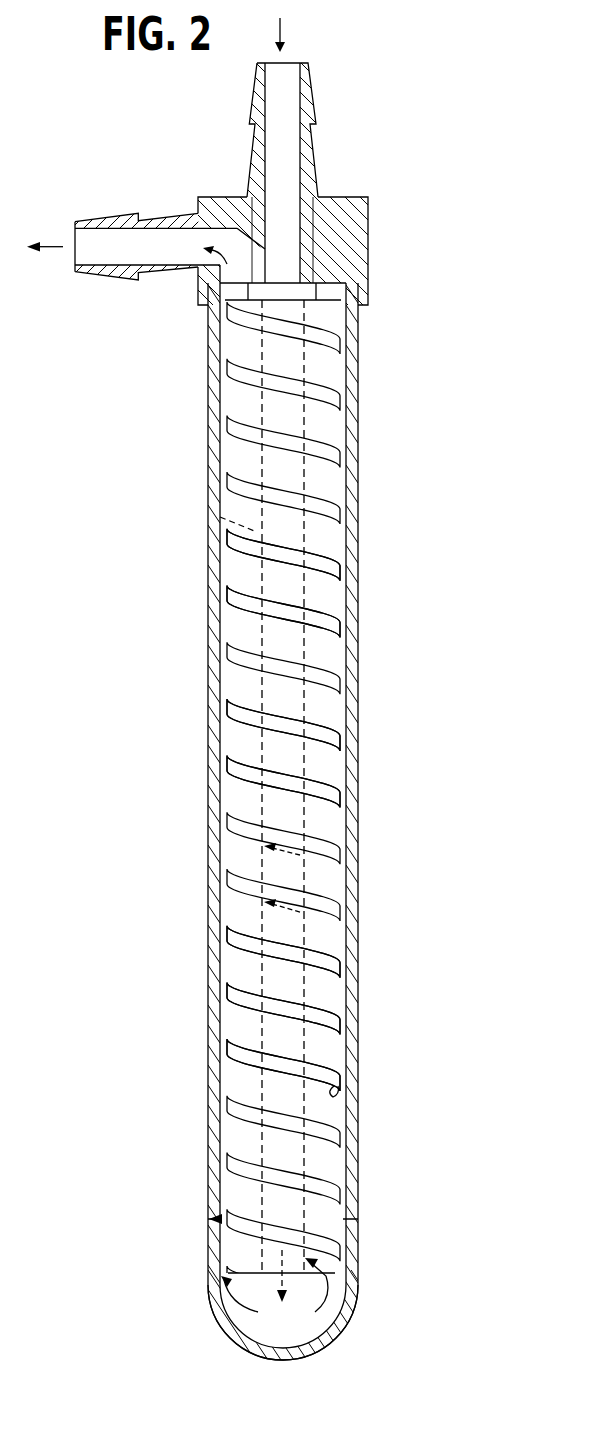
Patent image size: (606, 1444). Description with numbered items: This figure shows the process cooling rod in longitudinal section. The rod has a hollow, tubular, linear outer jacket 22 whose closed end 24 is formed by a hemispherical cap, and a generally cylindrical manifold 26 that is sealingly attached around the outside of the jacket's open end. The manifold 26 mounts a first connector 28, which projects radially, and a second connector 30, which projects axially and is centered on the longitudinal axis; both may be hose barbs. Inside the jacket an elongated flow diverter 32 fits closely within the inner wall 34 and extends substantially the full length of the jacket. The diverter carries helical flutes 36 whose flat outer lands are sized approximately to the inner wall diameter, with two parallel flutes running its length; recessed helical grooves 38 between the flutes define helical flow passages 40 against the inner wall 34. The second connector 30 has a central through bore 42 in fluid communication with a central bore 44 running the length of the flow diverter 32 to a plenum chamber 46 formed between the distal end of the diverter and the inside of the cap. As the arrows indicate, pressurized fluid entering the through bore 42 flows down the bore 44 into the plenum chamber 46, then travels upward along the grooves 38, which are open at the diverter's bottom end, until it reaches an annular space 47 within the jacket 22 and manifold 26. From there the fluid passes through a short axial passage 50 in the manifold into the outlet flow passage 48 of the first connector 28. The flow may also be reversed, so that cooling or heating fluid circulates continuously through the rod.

The outer jacket 22 is at (358, 492).
The closed end 24 is at (225, 1327).
The manifold 26 is at (368, 230).
The first connector 28 is at (113, 278).
The second connector 30 is at (316, 96).
The flow diverter 32 is at (237, 1036).
The inner wall 34 is at (333, 1087).
The helical flutes 36 is at (335, 1013).
The helical grooves 38 is at (325, 757).
The helical flow passages 40 is at (342, 594).
The central through bore 42 is at (271, 168).
The central bore 44 is at (208, 512).
The plenum chamber 46 is at (298, 1305).
The annular space 47 is at (352, 287).
The outlet flow passage 48 is at (121, 248).
The short axial passage 50 is at (247, 260).